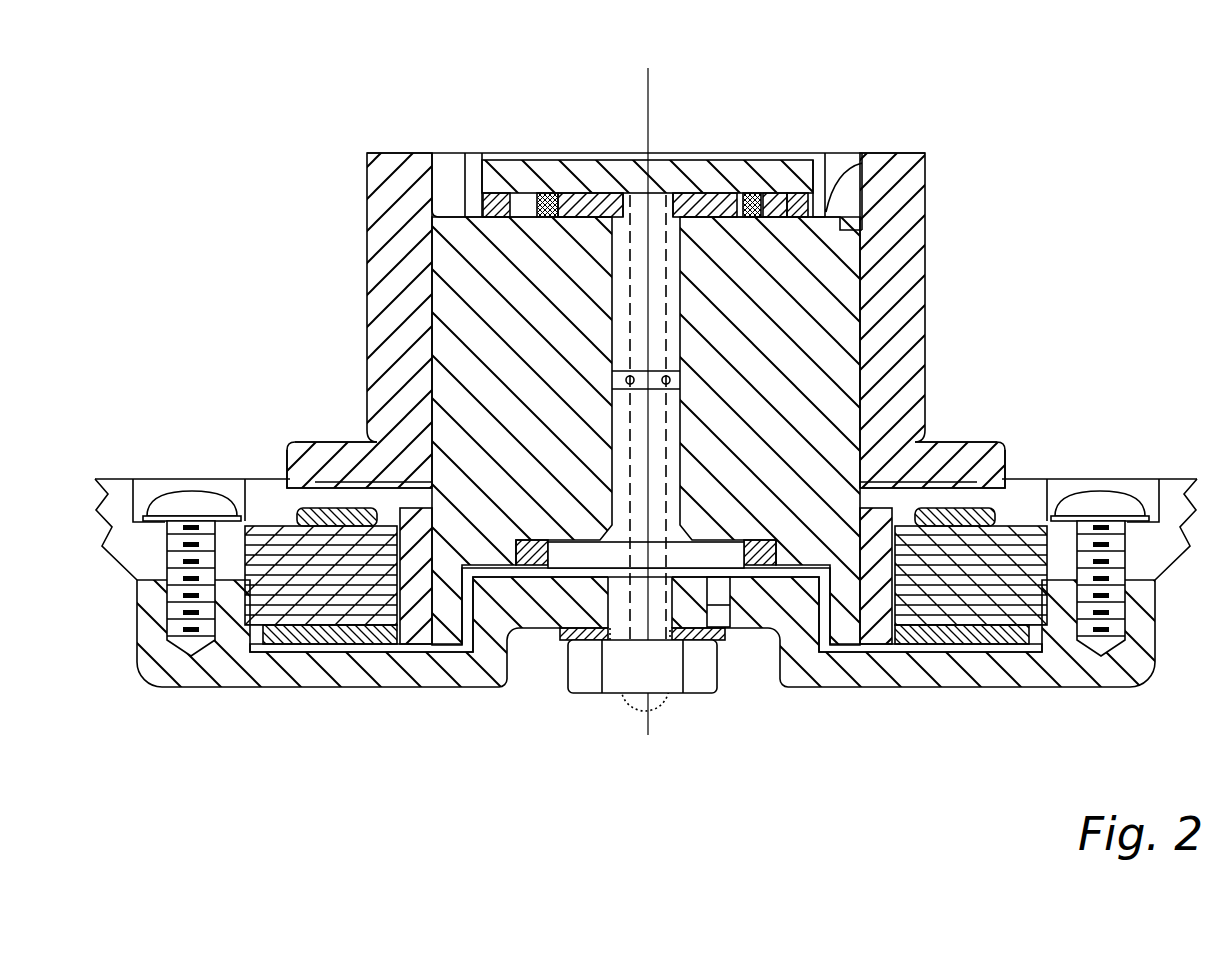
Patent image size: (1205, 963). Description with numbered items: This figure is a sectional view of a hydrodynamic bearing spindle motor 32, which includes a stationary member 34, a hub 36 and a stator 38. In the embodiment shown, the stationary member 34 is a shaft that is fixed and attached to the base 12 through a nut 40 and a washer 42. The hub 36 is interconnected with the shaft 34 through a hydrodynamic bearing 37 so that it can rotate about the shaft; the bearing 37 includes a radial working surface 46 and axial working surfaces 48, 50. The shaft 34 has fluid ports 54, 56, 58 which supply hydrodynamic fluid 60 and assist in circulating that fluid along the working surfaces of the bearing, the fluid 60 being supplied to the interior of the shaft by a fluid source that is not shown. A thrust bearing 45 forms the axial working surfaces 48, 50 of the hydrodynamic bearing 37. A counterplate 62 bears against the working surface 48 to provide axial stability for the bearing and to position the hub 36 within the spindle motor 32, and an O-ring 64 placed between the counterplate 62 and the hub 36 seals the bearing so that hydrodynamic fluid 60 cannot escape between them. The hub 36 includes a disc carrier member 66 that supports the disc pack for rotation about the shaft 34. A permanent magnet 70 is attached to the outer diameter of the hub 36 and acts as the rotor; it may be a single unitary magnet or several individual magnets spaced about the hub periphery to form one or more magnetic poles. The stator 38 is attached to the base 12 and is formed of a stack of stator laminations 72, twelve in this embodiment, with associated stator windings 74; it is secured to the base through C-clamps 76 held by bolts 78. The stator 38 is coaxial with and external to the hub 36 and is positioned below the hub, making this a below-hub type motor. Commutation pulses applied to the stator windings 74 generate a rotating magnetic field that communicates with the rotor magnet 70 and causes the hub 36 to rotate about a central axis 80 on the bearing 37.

The base 12 is at (428, 687).
The hydrodynamic bearing spindle motor 32 is at (896, 98).
The stationary member 34 is at (700, 217).
The hub 36 is at (852, 182).
The hydrodynamic bearing 37 is at (598, 285).
The stator 38 is at (290, 500).
The nut 40 is at (590, 694).
The washer 42 is at (720, 641).
The thrust bearing 45 is at (602, 208).
The radial working surface 46 is at (692, 300).
The axial working surface 48 is at (752, 195).
The axial working surface 50 is at (798, 196).
The fluid port 54 is at (625, 374).
The fluid port 56 is at (682, 373).
The fluid port 58 is at (664, 195).
The hydrodynamic fluid 60 is at (546, 193).
The counterplate 62 is at (506, 160).
The O-ring 64 is at (468, 192).
The disc carrier member 66 is at (926, 246).
The permanent magnet 70 is at (862, 646).
The stator laminations 72 is at (1035, 646).
The stator windings 74 is at (950, 644).
The C-clamp 76 is at (296, 508).
The bolt 78 is at (176, 491).
The central axis 80 is at (650, 76).